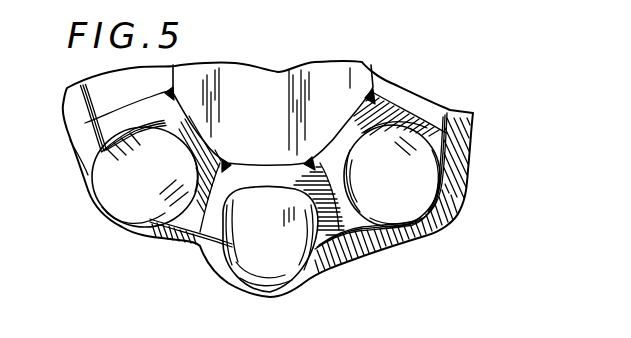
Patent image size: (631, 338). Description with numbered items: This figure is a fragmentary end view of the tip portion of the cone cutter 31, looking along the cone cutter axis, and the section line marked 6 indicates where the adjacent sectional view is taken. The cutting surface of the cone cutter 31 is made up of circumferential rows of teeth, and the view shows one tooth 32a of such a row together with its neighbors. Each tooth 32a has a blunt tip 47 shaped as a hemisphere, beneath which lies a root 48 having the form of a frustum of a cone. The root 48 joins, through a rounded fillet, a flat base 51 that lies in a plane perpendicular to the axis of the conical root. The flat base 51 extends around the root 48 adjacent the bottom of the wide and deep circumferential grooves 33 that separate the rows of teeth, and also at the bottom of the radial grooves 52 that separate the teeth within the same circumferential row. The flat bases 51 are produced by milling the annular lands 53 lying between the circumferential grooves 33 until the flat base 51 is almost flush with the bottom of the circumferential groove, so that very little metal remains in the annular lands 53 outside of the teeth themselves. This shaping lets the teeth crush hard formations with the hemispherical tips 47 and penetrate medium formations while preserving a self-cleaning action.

The cone cutter 31 is at (500, 154).
The tooth 32a is at (445, 206).
The circumferential groove 33 is at (84, 150).
The blunt tip 47 is at (110, 204).
The root 48 is at (131, 135).
The flat base 51 is at (326, 262).
The radial groove 52 is at (216, 212).
The annular land 53 is at (85, 123).
The section line 6- 6 is at (245, 32).